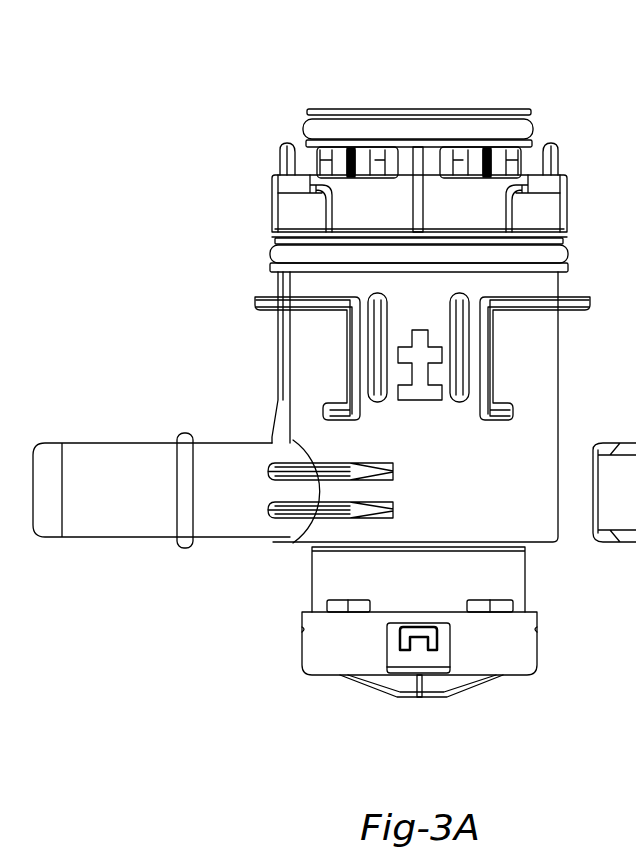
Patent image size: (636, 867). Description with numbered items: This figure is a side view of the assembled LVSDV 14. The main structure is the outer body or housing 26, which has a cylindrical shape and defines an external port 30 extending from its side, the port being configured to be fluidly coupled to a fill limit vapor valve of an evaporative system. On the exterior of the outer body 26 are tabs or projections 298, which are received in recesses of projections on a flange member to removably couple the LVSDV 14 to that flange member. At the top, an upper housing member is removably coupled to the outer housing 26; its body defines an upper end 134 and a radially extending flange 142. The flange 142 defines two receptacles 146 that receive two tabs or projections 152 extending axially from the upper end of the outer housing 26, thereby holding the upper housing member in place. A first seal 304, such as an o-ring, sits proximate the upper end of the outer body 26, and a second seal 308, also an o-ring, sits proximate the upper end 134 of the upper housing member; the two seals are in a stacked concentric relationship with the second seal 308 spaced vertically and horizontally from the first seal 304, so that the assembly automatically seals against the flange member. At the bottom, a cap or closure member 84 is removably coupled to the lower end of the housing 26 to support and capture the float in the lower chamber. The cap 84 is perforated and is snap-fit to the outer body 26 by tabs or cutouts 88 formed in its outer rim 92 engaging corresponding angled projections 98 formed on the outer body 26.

The LVSDV 14 is at (290, 97).
The upper end 134 is at (328, 110).
The second seal 308 is at (531, 128).
The tabs or projections 152 is at (278, 157).
The receptacles 146 is at (272, 188).
The radially extending flange 142 is at (561, 240).
The first seal 304 is at (271, 255).
The outer body or housing 26 is at (545, 362).
The tabs or projections 298 is at (420, 400).
The external port 30 is at (101, 450).
The outer rim 92 is at (318, 644).
The cap or closure member 84 is at (529, 656).
The tabs or cutouts 88 is at (400, 655).
The angled projections 98 is at (418, 624).